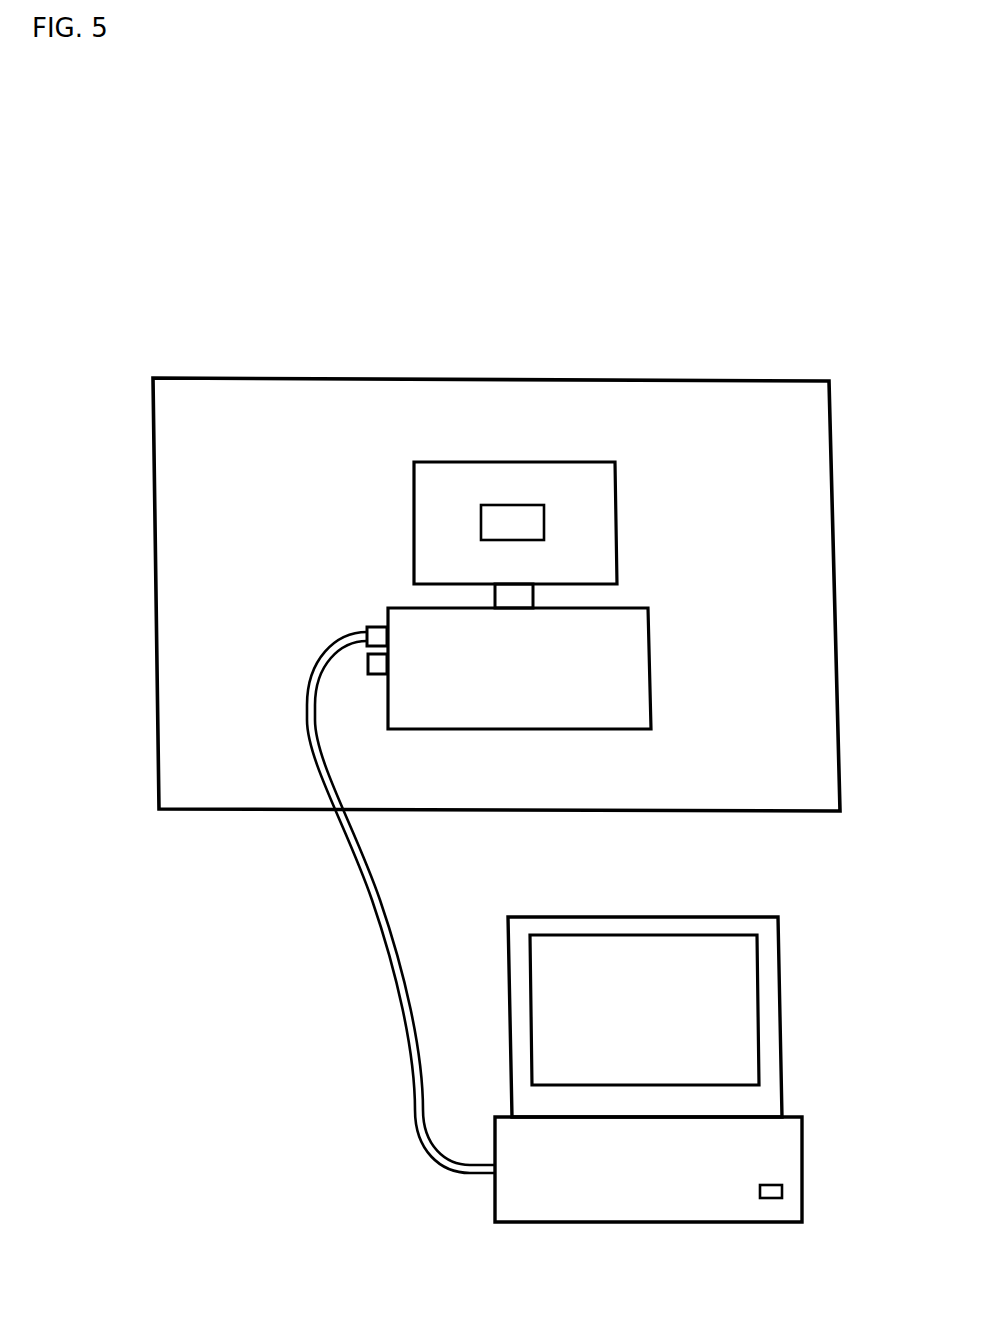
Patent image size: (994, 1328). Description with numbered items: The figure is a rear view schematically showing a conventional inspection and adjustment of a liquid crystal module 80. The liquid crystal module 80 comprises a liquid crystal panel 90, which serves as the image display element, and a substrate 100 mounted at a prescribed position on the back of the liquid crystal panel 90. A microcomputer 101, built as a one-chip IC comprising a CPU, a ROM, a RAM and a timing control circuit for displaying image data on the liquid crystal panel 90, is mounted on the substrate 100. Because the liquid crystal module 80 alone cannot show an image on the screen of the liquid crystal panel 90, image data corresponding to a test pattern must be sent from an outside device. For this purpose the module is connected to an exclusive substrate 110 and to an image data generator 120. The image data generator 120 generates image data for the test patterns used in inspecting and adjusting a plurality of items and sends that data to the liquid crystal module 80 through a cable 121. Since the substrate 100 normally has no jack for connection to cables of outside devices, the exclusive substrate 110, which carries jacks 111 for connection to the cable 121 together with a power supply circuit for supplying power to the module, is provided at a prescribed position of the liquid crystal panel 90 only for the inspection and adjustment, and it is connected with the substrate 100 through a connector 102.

The liquid crystal module 80 is at (765, 359).
The liquid crystal panel 90 is at (832, 447).
The substrate 100 is at (558, 462).
The microcomputer 101 is at (546, 520).
The connector 102 is at (535, 598).
The exclusive substrate 110 is at (650, 656).
The jacks 111 is at (380, 625).
The image data generator 120 is at (784, 1080).
The cable 121 is at (404, 951).